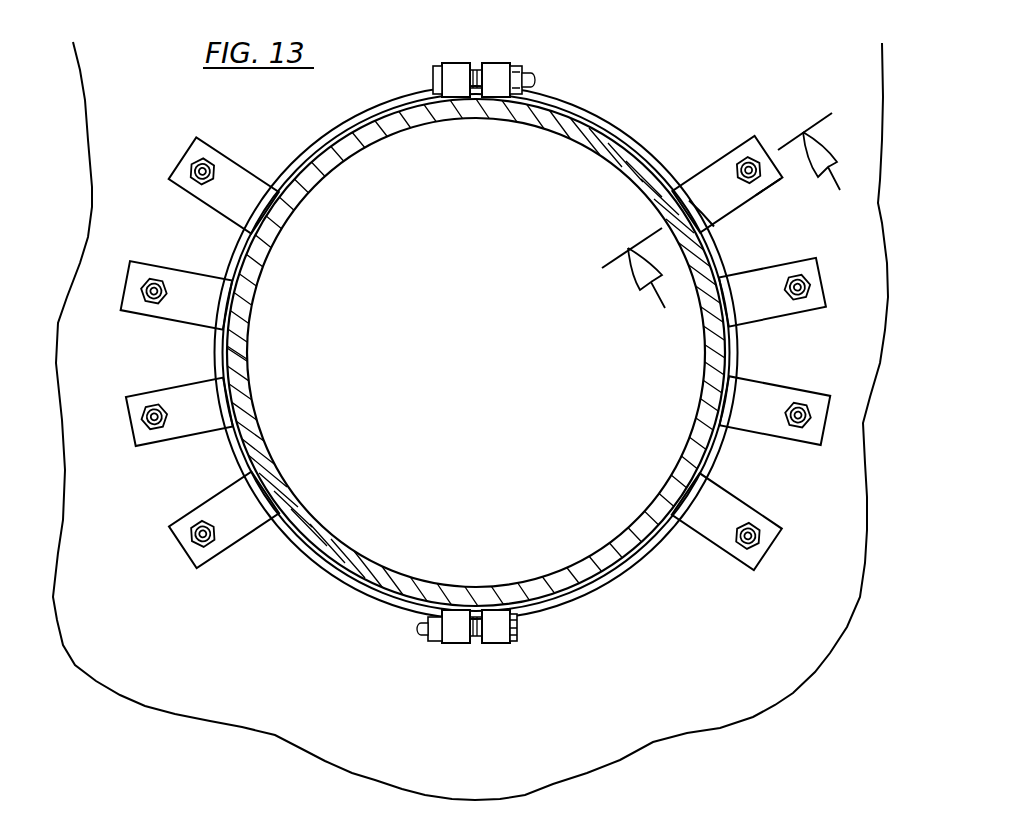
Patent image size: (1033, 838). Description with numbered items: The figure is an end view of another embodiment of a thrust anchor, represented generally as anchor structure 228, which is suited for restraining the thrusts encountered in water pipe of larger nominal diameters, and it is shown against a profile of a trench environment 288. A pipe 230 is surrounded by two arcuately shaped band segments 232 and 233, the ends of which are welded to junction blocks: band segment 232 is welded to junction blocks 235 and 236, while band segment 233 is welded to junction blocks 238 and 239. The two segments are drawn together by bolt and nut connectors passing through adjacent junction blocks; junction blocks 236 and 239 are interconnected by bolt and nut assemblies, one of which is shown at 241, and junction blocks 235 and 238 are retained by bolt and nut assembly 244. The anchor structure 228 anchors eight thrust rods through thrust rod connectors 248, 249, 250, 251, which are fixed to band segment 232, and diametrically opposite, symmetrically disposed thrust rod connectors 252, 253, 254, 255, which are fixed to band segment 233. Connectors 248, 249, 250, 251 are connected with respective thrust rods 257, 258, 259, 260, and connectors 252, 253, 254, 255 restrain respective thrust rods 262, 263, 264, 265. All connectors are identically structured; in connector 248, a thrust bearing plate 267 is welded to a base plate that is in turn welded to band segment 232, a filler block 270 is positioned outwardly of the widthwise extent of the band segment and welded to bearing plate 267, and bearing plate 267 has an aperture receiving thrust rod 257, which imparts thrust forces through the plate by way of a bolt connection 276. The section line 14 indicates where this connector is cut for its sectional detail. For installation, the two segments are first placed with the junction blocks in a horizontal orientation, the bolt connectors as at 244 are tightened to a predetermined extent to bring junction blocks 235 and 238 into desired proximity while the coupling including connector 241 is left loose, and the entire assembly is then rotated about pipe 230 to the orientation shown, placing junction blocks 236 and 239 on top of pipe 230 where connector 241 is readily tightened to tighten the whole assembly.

The anchor structure 228 is at (479, 343).
The pipe 230 is at (333, 158).
The band segment 232 is at (608, 120).
The band segment 233 is at (337, 134).
The junction block 235 is at (494, 643).
The junction block 236 is at (497, 76).
The junction block 238 is at (458, 643).
The junction block 239 is at (457, 75).
The bolt and nut assembly 241 is at (534, 80).
The bolt and nut assembly 244 is at (518, 630).
The thrust rod connector 248 is at (752, 132).
The thrust rod connector 249 is at (817, 256).
The thrust rod connector 250 is at (804, 386).
The thrust rod connector 251 is at (806, 526).
The thrust rod connector 252 is at (191, 561).
The thrust rod connector 253 is at (162, 448).
The thrust rod connector 254 is at (145, 316).
The thrust rod connector 255 is at (183, 192).
The thrust rod 257 is at (738, 162).
The thrust rod 258 is at (800, 288).
The thrust rod 259 is at (801, 424).
The thrust rod 260 is at (755, 541).
The thrust rod 262 is at (196, 533).
The thrust rod 263 is at (148, 418).
The thrust rod 264 is at (148, 290).
The thrust rod 265 is at (199, 163).
The thrust bearing plate 267 is at (768, 178).
The filler block 270 is at (697, 213).
The bolt connection 276 is at (748, 185).
The trench environment profile 288 is at (283, 732).
The section line 14- 14 is at (721, 209).